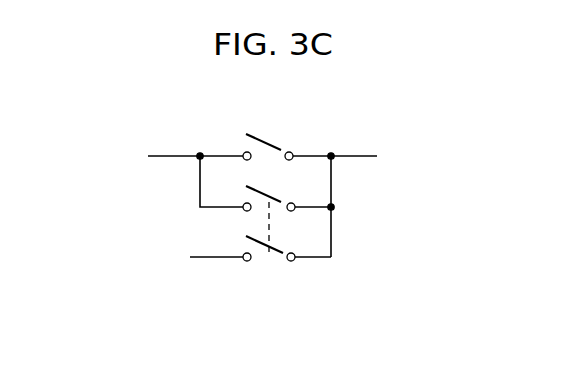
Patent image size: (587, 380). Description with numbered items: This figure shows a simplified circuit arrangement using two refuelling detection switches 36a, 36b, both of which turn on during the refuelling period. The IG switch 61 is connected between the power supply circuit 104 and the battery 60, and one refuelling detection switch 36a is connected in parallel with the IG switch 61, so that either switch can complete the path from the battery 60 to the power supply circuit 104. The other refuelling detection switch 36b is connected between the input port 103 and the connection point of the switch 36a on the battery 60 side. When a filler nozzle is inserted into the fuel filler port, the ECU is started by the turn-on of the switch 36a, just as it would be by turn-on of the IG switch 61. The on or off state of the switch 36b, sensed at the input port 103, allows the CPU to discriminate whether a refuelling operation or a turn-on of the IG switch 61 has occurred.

The battery 60 is at (354, 198).
The IG switch 61 is at (288, 151).
The refuelling detection switch 36a is at (278, 201).
The refuelling detection switch 36b is at (267, 258).
The input port 103 is at (192, 257).
The power supply circuit 104 is at (170, 173).